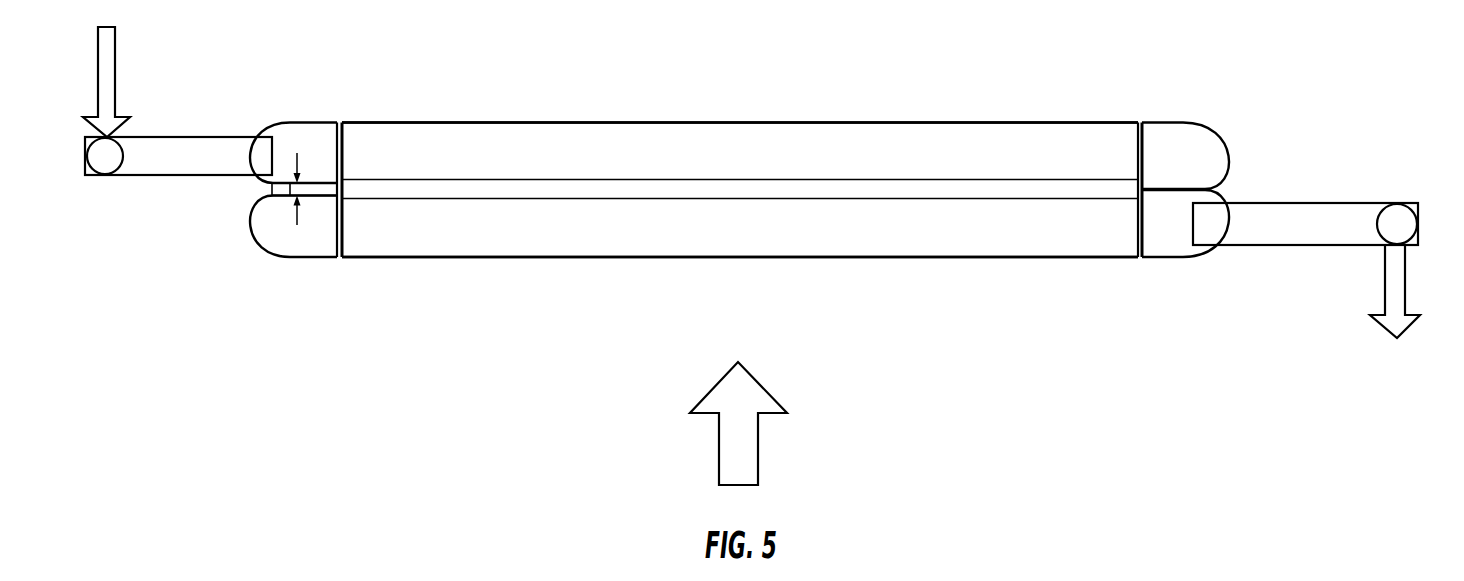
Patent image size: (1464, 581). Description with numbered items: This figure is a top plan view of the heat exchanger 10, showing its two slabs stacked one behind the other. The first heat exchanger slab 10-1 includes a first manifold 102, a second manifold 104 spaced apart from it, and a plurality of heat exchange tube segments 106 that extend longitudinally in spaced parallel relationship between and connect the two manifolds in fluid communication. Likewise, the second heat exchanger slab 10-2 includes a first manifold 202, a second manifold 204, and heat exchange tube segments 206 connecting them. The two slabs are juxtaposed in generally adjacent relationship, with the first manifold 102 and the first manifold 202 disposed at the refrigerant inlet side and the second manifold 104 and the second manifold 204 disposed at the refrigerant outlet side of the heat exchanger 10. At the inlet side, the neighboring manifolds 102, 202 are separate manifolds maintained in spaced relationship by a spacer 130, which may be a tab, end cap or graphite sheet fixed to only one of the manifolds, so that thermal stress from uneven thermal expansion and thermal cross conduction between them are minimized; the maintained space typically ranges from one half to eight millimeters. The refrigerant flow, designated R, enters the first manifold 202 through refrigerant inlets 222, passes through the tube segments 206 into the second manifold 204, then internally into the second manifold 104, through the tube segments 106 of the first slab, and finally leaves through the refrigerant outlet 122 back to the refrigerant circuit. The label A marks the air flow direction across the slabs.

The heat exchanger 10 is at (1047, 293).
The first heat exchanger slab 10-1 is at (597, 267).
The second heat exchanger slab 10-2 is at (595, 105).
The first manifold 102 is at (283, 258).
The second manifold 104 is at (1217, 197).
The heat exchange tube segments 106 is at (940, 258).
The refrigerant outlet 122 is at (1357, 203).
The spacer 130 is at (264, 192).
The first manifold 202 is at (308, 120).
The second manifold 204 is at (1217, 135).
The heat exchange tube segments 206 is at (950, 121).
The refrigerant inlets 222 is at (217, 136).
The refrigerant flow R is at (117, 85).
The air flow A is at (759, 432).